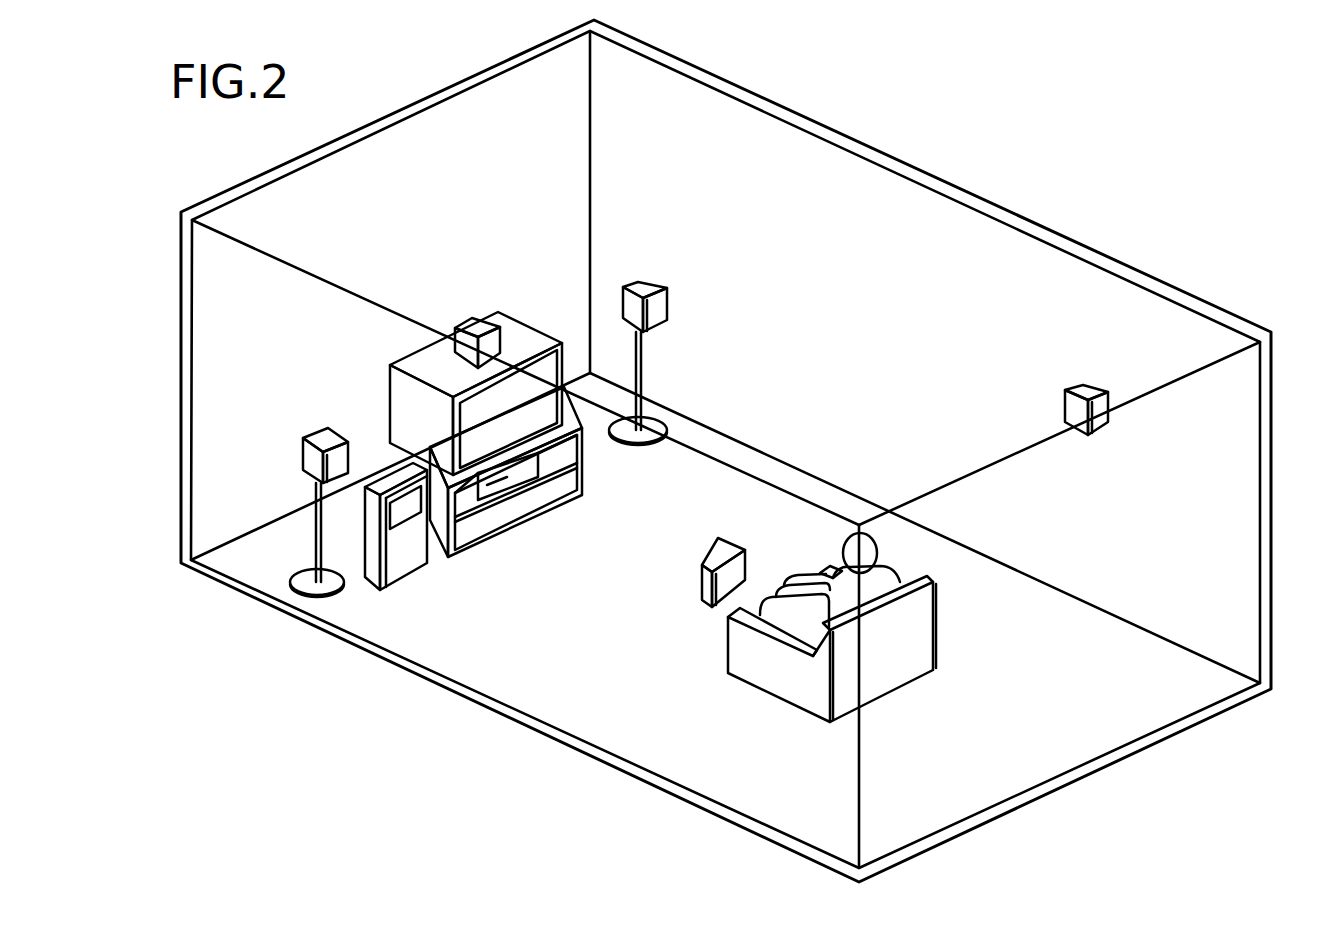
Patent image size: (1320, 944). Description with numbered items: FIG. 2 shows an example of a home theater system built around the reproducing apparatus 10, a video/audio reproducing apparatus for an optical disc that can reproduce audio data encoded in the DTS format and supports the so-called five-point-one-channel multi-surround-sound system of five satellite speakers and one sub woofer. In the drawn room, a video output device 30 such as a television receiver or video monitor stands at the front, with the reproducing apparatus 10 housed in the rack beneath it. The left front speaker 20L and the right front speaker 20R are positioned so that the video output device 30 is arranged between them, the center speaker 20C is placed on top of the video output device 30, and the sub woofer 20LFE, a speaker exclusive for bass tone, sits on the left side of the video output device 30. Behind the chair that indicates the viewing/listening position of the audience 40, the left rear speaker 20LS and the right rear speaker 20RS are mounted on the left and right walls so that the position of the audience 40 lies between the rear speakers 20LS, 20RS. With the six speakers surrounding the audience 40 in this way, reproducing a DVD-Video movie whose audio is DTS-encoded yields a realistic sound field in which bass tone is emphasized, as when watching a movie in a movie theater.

The reproducing apparatus 10 is at (529, 487).
The video output device 30 is at (390, 392).
The center speaker 20C is at (472, 324).
The left front speaker 20L is at (312, 436).
The right front speaker 20R is at (642, 287).
The left rear speaker 20LS is at (713, 553).
The right rear speaker 20RS is at (1088, 388).
The sub woofer 20LFE is at (405, 568).
The audience 40 is at (877, 553).